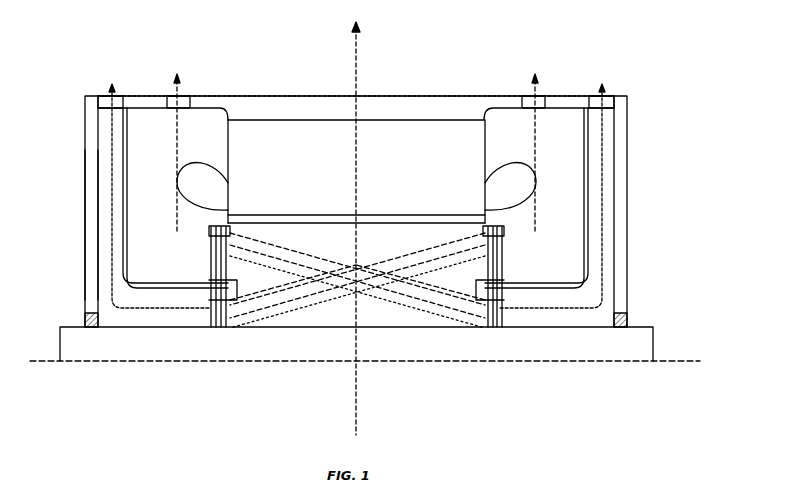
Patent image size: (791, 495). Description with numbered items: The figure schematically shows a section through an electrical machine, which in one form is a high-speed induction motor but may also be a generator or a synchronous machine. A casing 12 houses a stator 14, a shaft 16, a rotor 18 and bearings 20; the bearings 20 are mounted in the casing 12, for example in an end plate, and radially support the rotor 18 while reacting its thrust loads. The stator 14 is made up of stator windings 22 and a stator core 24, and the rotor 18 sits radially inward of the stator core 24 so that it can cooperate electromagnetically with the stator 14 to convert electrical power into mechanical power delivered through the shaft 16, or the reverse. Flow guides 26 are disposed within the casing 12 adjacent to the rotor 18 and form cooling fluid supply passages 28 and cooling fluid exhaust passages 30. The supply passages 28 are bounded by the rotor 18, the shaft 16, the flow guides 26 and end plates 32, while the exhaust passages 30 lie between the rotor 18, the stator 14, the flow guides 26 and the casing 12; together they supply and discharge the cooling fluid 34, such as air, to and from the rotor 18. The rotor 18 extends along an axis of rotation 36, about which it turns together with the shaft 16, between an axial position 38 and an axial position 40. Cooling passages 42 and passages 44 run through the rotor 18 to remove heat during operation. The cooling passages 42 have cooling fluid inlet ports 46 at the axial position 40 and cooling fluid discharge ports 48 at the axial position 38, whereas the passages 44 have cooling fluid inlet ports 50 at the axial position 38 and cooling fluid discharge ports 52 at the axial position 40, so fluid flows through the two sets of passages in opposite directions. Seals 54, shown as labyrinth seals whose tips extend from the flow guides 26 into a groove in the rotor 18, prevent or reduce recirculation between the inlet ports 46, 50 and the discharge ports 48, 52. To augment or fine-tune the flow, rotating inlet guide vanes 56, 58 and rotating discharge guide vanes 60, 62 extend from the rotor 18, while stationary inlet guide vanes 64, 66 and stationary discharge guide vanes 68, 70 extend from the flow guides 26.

The casing 12 is at (424, 97).
The stator 14 is at (218, 128).
The shaft 16 is at (654, 352).
The rotor 18 is at (370, 214).
The bearings 20 is at (85, 322).
The stator windings 22 is at (535, 187).
The stator core 24 is at (325, 145).
The flow guides 26 is at (160, 283).
The cooling fluid supply passages 28 is at (101, 194).
The cooling fluid exhaust passages 30 is at (556, 137).
The end plates 32 is at (85, 233).
The cooling fluid 34 is at (603, 160).
The axis of rotation 36 is at (387, 362).
The axial position 38 is at (226, 336).
The axial position 40 is at (489, 328).
The cooling passages 42 is at (412, 300).
The passages 44 is at (402, 252).
The cooling fluid inlet ports 46 is at (468, 301).
The cooling fluid discharge ports 48 is at (235, 230).
The cooling fluid inlet ports 50 is at (244, 301).
The cooling fluid discharge ports 52 is at (480, 231).
The seals 54 is at (238, 271).
The rotating inlet guide vane 56 is at (493, 328).
The rotating inlet guide vane 58 is at (216, 328).
The rotating discharge guide vane 60 is at (235, 211).
The rotating discharge guide vane 62 is at (477, 211).
The stationary inlet guide vane 64 is at (500, 330).
The stationary inlet guide vane 66 is at (211, 328).
The stationary discharge guide vane 68 is at (206, 258).
The stationary discharge guide vane 70 is at (506, 258).